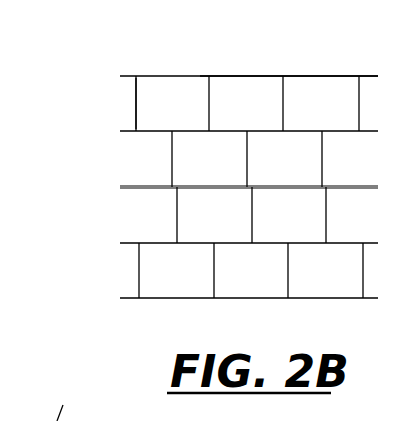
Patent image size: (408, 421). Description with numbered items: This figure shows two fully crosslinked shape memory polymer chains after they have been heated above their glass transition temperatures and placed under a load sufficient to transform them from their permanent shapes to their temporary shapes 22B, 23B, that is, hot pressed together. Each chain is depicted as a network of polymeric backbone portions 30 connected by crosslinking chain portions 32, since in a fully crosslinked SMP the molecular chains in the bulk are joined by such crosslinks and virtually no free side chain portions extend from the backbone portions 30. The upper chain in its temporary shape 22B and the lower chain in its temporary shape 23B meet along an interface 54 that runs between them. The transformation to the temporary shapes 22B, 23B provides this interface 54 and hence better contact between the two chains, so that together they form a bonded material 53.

The polymeric backbone portion 30 is at (184, 76).
The crosslinking chain portion 32 is at (136, 104).
The bonded material 53 is at (266, 46).
The interface 54 is at (108, 188).
The temporary shape 22B is at (38, 96).
The temporary shape 23B is at (20, 271).